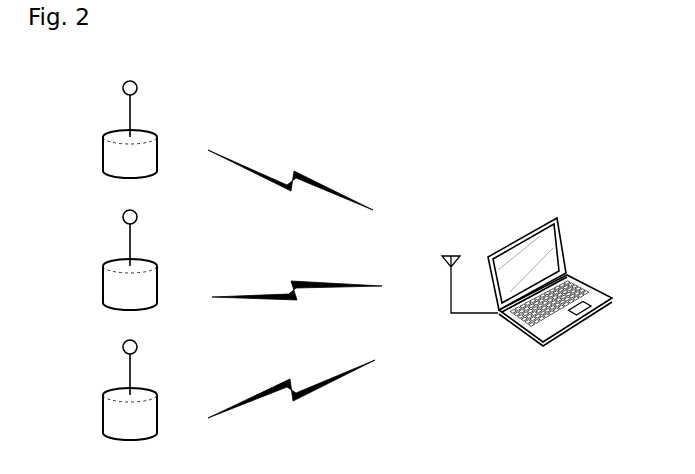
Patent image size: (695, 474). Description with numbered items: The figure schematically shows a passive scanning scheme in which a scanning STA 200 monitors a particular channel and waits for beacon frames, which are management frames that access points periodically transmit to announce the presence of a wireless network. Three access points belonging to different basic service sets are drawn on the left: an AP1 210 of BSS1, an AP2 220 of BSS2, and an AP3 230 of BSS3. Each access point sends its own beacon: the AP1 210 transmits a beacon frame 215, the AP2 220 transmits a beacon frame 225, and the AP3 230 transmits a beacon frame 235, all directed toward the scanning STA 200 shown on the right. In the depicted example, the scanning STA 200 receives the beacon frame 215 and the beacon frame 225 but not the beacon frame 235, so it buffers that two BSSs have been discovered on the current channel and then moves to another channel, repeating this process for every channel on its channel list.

The scanning STA 200 is at (558, 334).
The AP1 210 is at (108, 131).
The beacon frame 215 is at (385, 110).
The AP2 220 is at (108, 260).
The beacon frame 225 is at (367, 245).
The AP3 230 is at (108, 390).
The beacon frame 235 is at (365, 427).